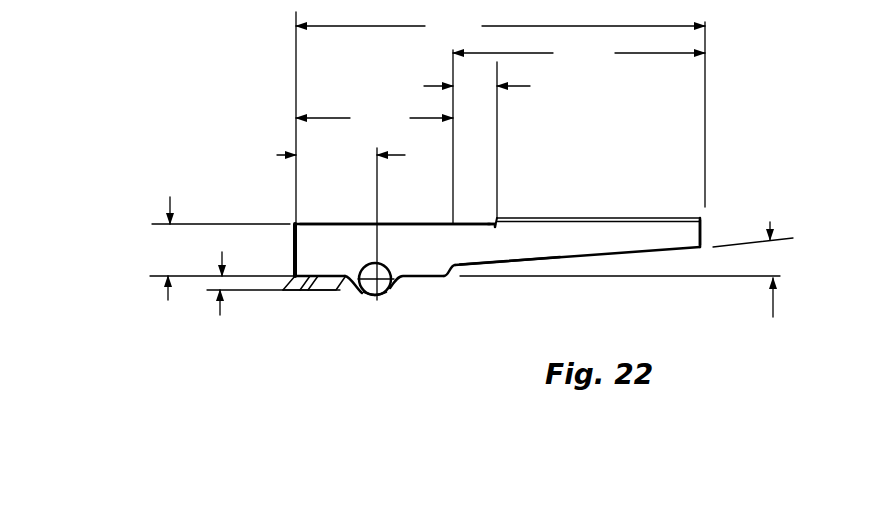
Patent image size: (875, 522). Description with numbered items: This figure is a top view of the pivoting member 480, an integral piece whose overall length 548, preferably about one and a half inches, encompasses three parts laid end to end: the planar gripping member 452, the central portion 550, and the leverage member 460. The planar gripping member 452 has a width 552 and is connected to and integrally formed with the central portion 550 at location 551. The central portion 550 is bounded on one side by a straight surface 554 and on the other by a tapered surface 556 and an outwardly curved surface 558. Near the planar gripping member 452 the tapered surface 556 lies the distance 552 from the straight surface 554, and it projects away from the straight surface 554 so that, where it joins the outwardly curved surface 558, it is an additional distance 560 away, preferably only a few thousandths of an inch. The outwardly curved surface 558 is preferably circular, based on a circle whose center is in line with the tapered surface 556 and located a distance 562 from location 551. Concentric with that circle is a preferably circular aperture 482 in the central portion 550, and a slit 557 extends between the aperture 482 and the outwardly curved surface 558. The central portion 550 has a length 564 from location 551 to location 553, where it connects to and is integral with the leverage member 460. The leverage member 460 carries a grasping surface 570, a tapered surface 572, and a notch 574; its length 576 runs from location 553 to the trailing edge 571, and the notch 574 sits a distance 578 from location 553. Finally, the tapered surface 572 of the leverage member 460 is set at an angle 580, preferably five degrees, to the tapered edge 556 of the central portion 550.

The length 548 is at (500, 117).
The length 576 is at (579, 131).
The distance 578 is at (500, 140).
The length 564 is at (374, 119).
The distance 562 is at (316, 219).
The distance 560 is at (465, 236).
The width 552 is at (244, 307).
The angle 580 is at (758, 286).
The planar gripping member 452 is at (288, 236).
The central portion 550 is at (313, 243).
The straight surface 554 is at (403, 221).
The notch 574 is at (495, 222).
The grasping surface 570 is at (553, 218).
The leverage member 460 is at (663, 233).
The trailing edge 571 is at (708, 227).
The tapered surface 572 is at (605, 254).
The pivoting member 480 is at (482, 284).
The location 553 is at (445, 284).
The aperture 482 is at (399, 284).
The outwardly curved surface 558 is at (386, 304).
The slit 557 is at (366, 301).
The tapered surface 556 is at (307, 291).
The location 551 is at (287, 280).